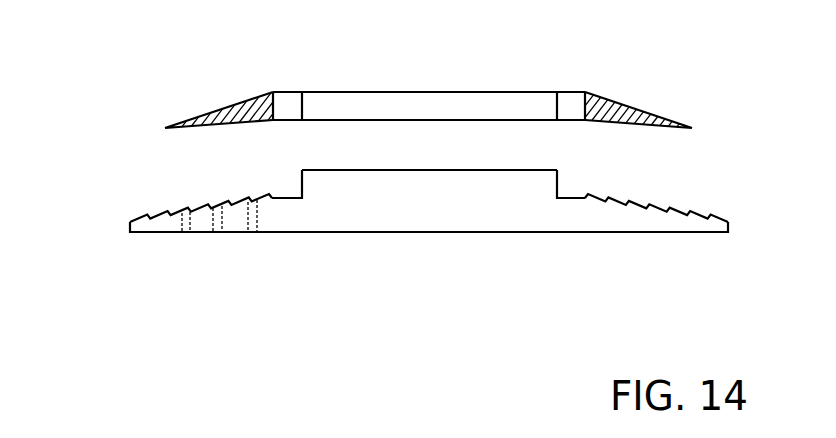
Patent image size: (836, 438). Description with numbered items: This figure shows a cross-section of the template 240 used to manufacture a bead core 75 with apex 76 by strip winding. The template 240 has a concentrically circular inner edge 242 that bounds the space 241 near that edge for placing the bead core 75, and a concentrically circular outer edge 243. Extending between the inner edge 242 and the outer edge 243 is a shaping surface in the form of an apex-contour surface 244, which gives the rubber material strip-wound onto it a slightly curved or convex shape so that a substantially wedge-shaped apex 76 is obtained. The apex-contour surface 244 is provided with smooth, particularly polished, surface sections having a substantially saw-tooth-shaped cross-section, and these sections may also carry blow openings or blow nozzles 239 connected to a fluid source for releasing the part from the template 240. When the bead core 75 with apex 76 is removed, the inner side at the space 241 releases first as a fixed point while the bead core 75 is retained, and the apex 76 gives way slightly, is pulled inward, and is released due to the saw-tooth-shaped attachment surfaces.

The bead core 75 is at (575, 100).
The apex 76 is at (640, 110).
The blow nozzles 239 is at (253, 233).
The template 240 is at (332, 248).
The space 241 is at (288, 182).
The inner edge 242 is at (553, 185).
The outer edge 243 is at (128, 224).
The apex-contour surface 244 is at (157, 210).